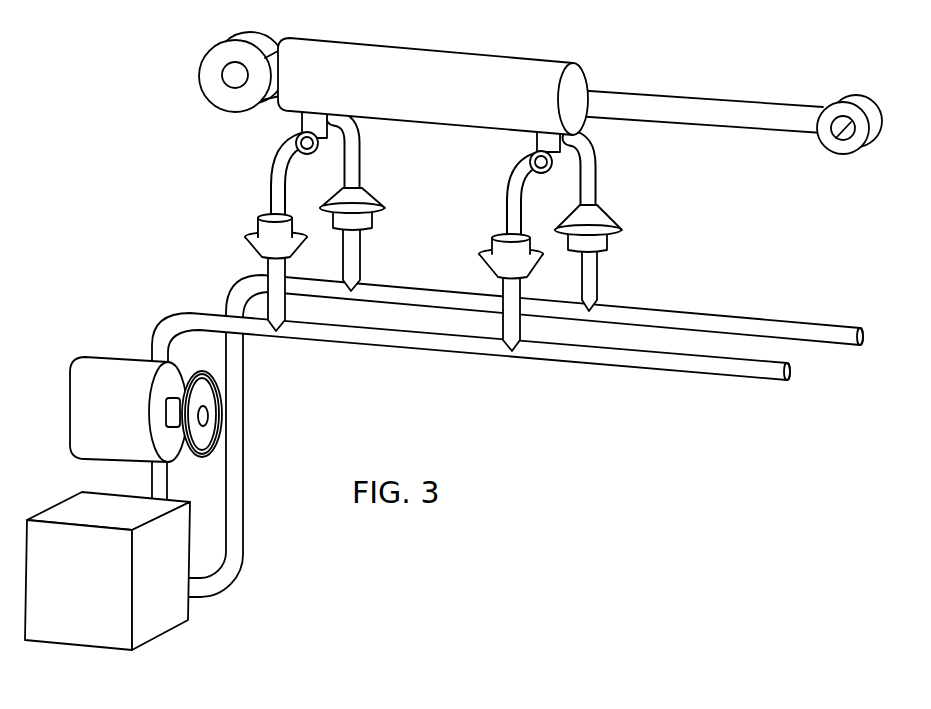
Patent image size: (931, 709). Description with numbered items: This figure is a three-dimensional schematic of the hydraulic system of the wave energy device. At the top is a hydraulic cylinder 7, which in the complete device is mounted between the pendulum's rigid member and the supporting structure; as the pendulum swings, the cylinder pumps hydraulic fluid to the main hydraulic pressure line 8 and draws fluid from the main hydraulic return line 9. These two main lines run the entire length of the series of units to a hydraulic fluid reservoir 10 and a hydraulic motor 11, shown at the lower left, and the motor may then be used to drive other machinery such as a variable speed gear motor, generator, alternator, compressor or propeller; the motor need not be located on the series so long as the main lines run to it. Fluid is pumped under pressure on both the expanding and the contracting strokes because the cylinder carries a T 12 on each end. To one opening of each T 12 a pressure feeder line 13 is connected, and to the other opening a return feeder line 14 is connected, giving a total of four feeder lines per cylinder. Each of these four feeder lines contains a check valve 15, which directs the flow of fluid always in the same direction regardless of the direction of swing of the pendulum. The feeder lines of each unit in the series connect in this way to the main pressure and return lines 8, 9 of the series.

The hydraulic cylinder 7 is at (567, 62).
The main hydraulic pressure line 8 is at (560, 358).
The main hydraulic return line 9 is at (658, 307).
The hydraulic fluid reservoir 10 is at (62, 501).
The hydraulic motor 11 is at (107, 357).
The T 12 is at (300, 125).
The pressure feeder line 13 is at (270, 179).
The return feeder line 14 is at (360, 147).
The check valve 15 is at (257, 228).